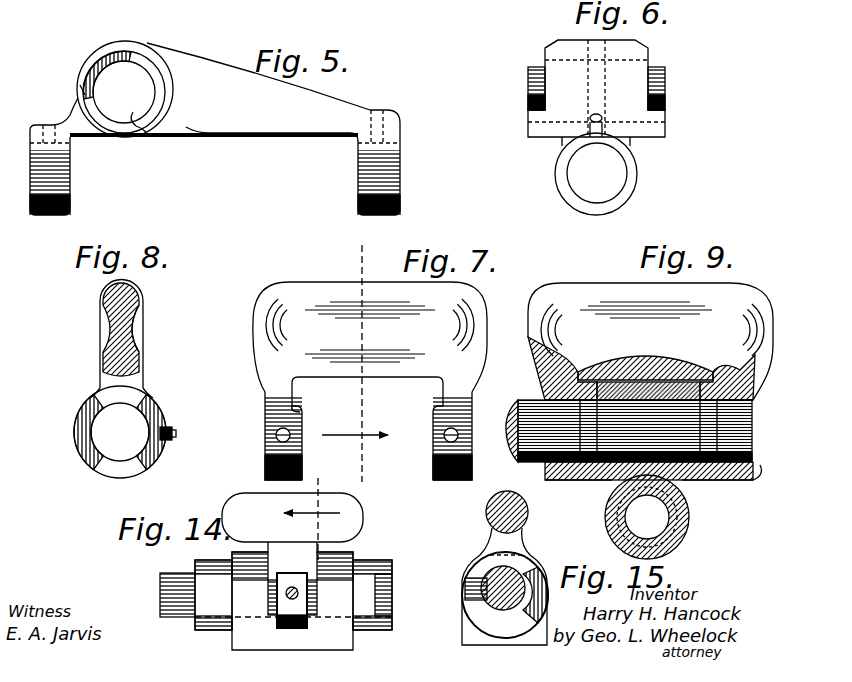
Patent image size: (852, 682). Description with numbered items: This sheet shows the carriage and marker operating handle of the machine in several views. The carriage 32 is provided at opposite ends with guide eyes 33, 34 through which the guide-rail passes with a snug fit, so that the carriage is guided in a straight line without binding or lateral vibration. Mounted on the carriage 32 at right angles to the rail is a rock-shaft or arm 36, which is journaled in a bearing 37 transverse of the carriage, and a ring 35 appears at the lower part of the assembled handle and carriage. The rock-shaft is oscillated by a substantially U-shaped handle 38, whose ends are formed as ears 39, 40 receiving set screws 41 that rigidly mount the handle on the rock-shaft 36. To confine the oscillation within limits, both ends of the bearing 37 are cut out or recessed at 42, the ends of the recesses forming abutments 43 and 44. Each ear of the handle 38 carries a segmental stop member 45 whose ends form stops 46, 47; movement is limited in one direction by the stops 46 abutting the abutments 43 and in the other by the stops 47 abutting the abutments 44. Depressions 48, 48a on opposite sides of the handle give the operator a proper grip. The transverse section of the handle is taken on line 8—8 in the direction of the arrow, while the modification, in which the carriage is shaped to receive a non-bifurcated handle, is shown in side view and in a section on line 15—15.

In FIG. 5, the carriage 32 is at (215, 93).
In FIG. 6, the carriage 32 is at (577, 92).
In FIG. 9, the carriage 32 is at (601, 482).
In FIG. 5, the guide eye 33 is at (70, 190).
In FIG. 6, the guide eye 33 is at (556, 178).
In FIG. 5, the guide eye 34 is at (372, 196).
In FIG. 9, the eye ring 35 is at (690, 531).
In FIG. 9, the rock-shaft 36 is at (540, 398).
In FIG. 5, the bearing 37 is at (140, 122).
In FIG. 6, the bearing 37 is at (632, 56).
In FIG. 9, the bearing 37 is at (625, 383).
In FIG. 8, the handle 38 is at (100, 334).
In FIG. 7, the handle 38 is at (359, 337).
In FIG. 9, the handle 38 is at (650, 329).
In FIG. 7, the ear 39 is at (265, 465).
In FIG. 9, the ear 39 is at (545, 478).
In FIG. 7, the ear 40 is at (433, 465).
In FIG. 9, the ear 40 is at (755, 473).
In FIG. 8, the set screw 41 is at (174, 432).
In FIG. 7, the set screw 41 is at (276, 436).
In FIG. 5, the recess 42 is at (97, 60).
In FIG. 5, the abutment 43 is at (150, 66).
In FIG. 6, the abutment 43 is at (544, 46).
In FIG. 5, the abutment 44 is at (82, 91).
In FIG. 6, the abutment 44 is at (528, 100).
In FIG. 8, the stop member 45 is at (105, 400).
In FIG. 7, the stop member 45 is at (312, 396).
In FIG. 9, the stop member 45 is at (588, 393).
In FIG. 8, the stop 46 is at (150, 410).
In FIG. 7, the stop 46 is at (305, 412).
In FIG. 8, the stop 47 is at (92, 410).
In FIG. 8, the depression 48 is at (110, 330).
In FIG. 8, the depression 48a is at (138, 328).
In FIG. 7, the section line 8— 8 is at (360, 365).
In FIG. 7, the section line 15— 15 is at (355, 462).
In FIG. 14, the section line 15— 15 is at (309, 572).